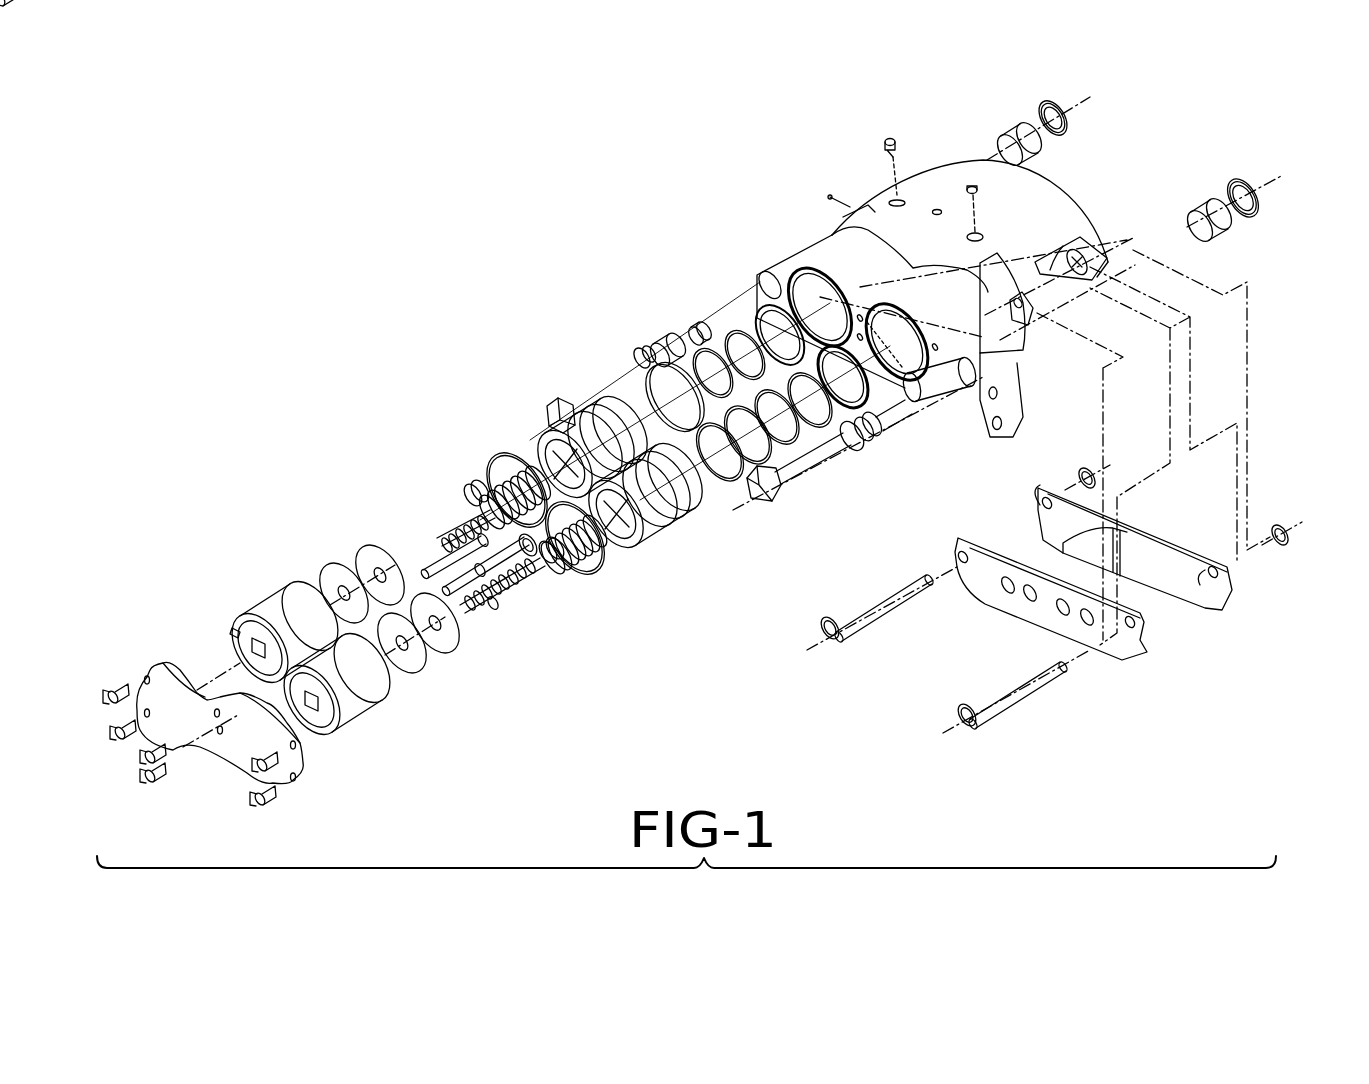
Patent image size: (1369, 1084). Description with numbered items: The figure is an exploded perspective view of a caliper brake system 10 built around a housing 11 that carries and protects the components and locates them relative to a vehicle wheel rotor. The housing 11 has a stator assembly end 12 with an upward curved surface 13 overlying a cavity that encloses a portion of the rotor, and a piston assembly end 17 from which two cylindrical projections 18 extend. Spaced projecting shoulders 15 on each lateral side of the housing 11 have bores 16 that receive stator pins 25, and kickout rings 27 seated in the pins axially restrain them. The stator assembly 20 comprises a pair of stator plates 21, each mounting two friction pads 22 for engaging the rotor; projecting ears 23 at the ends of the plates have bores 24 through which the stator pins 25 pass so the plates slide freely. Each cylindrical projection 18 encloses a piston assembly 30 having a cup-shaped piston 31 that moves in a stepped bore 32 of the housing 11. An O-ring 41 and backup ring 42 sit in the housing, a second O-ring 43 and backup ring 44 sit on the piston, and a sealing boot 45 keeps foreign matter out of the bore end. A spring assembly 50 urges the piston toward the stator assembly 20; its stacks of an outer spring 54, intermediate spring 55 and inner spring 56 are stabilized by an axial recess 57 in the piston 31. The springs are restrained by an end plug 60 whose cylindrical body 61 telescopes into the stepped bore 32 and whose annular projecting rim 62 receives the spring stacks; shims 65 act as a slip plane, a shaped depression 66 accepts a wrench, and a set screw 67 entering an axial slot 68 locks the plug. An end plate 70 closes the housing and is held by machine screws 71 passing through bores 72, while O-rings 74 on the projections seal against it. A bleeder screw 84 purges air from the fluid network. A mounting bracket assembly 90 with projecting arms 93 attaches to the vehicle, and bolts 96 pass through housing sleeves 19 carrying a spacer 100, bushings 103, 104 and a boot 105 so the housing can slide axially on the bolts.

The caliper brake system 10 is at (490, 245).
The housing 11 is at (1055, 186).
The stator assembly end 12 is at (1047, 172).
The upward curved surface 13 is at (995, 217).
The projecting shoulders 15 is at (857, 217).
The bores 16 is at (1098, 270).
The piston assembly end 17 is at (800, 283).
The cylindrical projections 18 is at (838, 267).
The sleeves 19 is at (808, 262).
The stator assembly 20 is at (1048, 632).
The stator plates 21 is at (1207, 553).
The pads 22 is at (1053, 577).
The projecting ears 23 is at (1050, 496).
The bores 24 is at (1050, 500).
The stator pins 25 is at (863, 617).
The kickout rings 27 is at (827, 622).
The piston assemblies 30 is at (473, 470).
The cup-shaped piston 31 is at (640, 530).
The stepped bore 32 is at (920, 383).
The O-ring 41 is at (690, 333).
The backup ring 42 is at (730, 340).
The O-ring 43 is at (643, 356).
The backup ring 44 is at (647, 380).
The sealing boot 45 is at (758, 316).
The spring assembly 50 is at (478, 500).
The outer spring 54 is at (572, 550).
The intermediate spring 55 is at (527, 583).
The inner spring 56 is at (470, 607).
The axial recess 57 is at (557, 450).
The end plug 60 is at (242, 600).
The cylindrical body 61 is at (323, 718).
The annular projecting rim 62 is at (353, 711).
The shims 65 is at (365, 563).
The shaped depression 66 is at (250, 647).
The set screw 67 is at (233, 630).
The axial slot 68 is at (796, 290).
The end plate 70 is at (240, 737).
The machine screws 71 is at (107, 690).
The bores 72 is at (137, 680).
The O-rings 74 is at (611, 553).
The bleeder screw 84 is at (887, 138).
The mounting bracket assembly 90 is at (1033, 398).
The projecting arms 93 is at (1020, 420).
The bolts 96 is at (783, 478).
The spacer 100 is at (917, 408).
The bushing 103 is at (887, 435).
The bushing 104 is at (1016, 125).
The boot 105 is at (1248, 180).